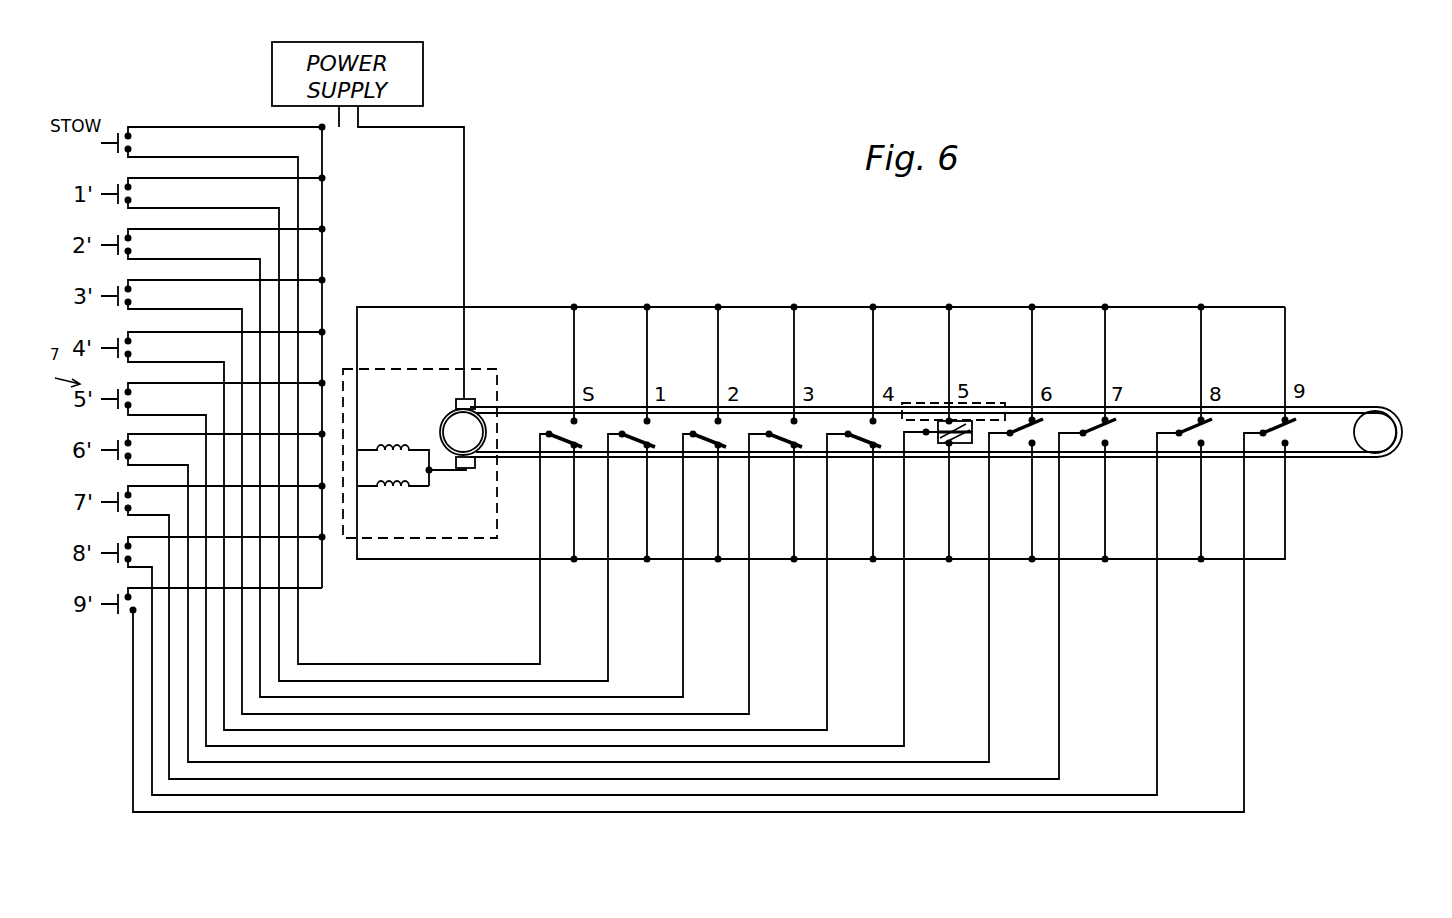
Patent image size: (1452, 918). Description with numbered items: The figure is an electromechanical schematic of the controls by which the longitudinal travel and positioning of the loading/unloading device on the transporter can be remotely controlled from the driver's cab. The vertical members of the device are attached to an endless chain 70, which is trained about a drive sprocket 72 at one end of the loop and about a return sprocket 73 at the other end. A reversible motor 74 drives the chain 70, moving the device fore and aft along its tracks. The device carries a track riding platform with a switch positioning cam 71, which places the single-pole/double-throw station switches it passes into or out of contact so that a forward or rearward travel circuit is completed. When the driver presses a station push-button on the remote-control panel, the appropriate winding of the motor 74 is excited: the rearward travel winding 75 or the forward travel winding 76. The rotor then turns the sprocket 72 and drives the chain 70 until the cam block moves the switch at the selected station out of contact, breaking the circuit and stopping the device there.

The endless chain 70 is at (1333, 407).
The switch positioning cam 71 is at (958, 428).
The drive sprocket 72 is at (476, 428).
The return sprocket 73 is at (1385, 428).
The reversible motor 74 is at (408, 369).
The rearward travel winding 75 is at (393, 446).
The forward travel winding 76 is at (414, 489).